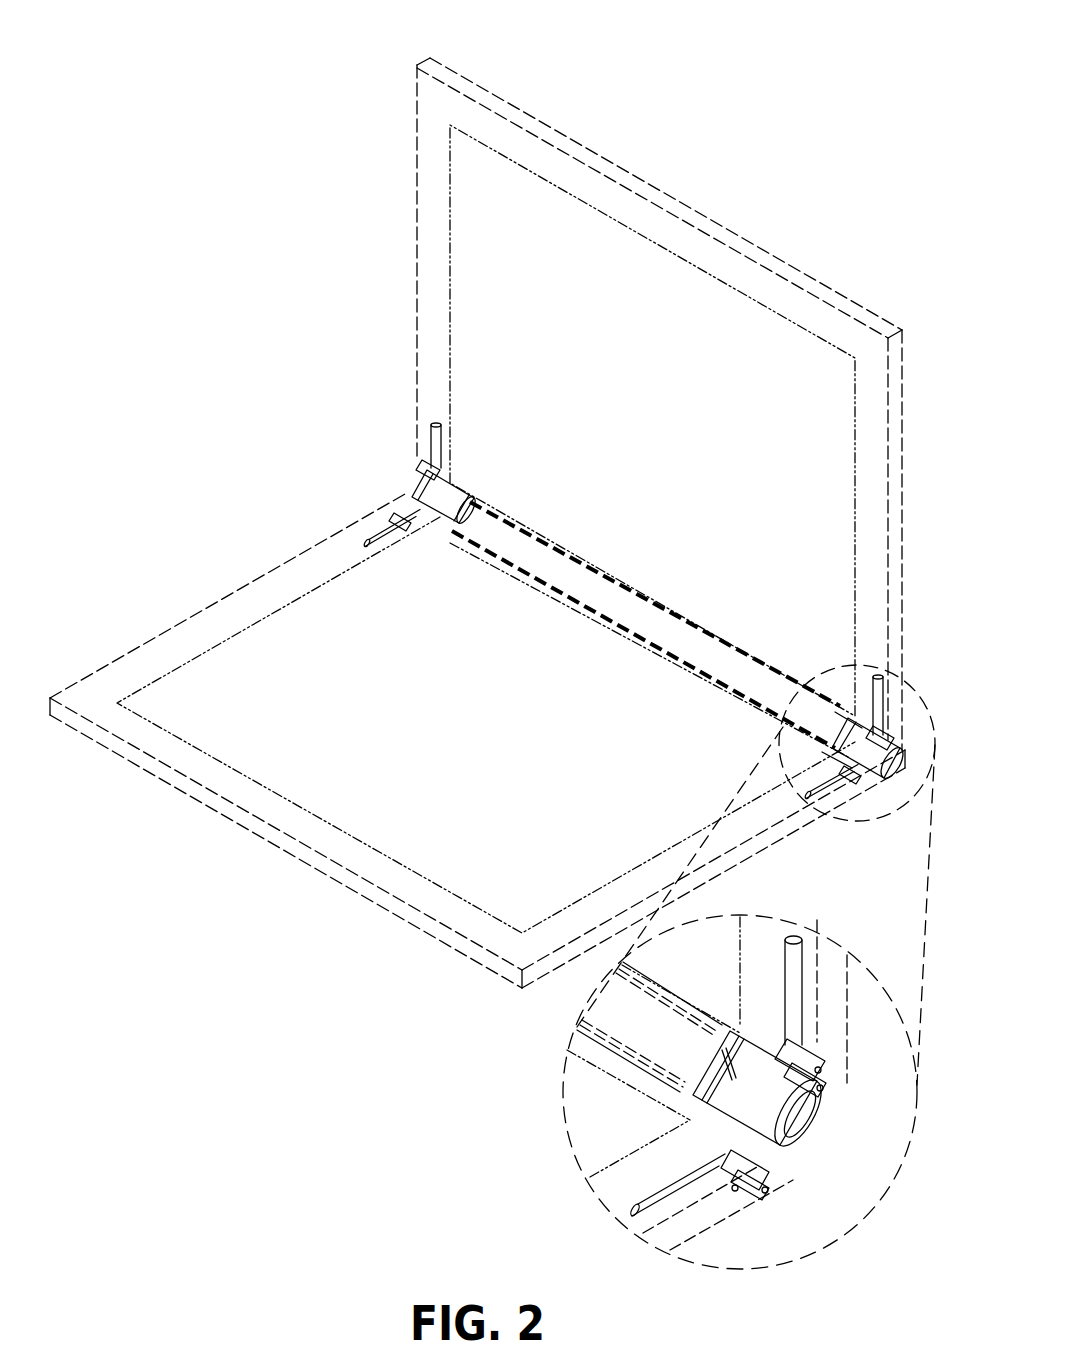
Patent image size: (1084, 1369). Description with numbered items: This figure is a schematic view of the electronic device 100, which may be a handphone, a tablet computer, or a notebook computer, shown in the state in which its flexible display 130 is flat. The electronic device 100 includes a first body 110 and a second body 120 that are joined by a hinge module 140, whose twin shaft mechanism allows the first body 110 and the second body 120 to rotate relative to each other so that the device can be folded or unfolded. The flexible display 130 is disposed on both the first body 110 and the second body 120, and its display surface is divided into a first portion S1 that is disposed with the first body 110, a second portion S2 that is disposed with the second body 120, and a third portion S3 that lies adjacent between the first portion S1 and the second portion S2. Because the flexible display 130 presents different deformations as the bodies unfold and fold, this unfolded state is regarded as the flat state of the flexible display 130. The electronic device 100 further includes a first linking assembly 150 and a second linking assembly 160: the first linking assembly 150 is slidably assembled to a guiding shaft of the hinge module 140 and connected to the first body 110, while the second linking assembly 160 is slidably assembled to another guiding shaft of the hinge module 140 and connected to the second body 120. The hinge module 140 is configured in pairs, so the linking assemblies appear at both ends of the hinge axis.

The electronic device 100 is at (500, 658).
The first body 110 is at (615, 404).
The second body 120 is at (477, 741).
The flexible display 130 is at (448, 374).
The hinge module 140 is at (445, 505).
The first linking assembly 150 is at (430, 465).
The second linking assembly 160 is at (393, 520).
The first portion S1 is at (508, 262).
The second portion S2 is at (214, 688).
The third portion S3 is at (514, 547).